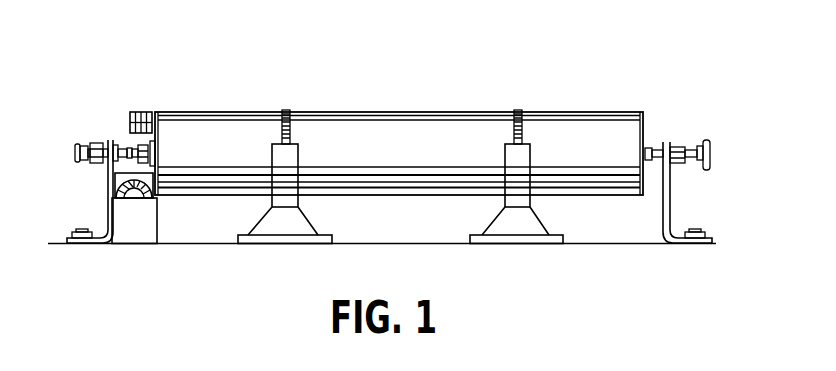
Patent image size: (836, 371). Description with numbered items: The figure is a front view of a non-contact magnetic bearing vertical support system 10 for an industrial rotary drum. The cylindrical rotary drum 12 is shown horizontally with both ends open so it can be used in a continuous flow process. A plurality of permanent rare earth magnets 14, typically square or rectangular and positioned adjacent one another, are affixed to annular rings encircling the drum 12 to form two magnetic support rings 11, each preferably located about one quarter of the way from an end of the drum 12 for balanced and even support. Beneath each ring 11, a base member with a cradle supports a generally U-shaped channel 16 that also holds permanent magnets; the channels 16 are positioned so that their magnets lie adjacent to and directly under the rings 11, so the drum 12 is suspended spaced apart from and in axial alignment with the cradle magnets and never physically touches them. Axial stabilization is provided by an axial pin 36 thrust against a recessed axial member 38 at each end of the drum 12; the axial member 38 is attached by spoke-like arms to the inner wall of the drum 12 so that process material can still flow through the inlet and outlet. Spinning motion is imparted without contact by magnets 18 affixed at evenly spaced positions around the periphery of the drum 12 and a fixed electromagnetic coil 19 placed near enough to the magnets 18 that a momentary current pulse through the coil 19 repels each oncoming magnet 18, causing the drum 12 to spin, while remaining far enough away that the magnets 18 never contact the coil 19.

The apparatus 10 is at (311, 92).
The magnetic support ring 11 is at (540, 96).
The cylindrical rotary drum 12 is at (401, 132).
The permanent rare earth magnet 14 is at (516, 110).
The U-shaped channel 16 is at (283, 202).
The magnet 18 is at (137, 112).
The electromagnetic coil 19 is at (118, 178).
The axial pin 36 is at (650, 148).
The recessed axial member 38 is at (645, 175).